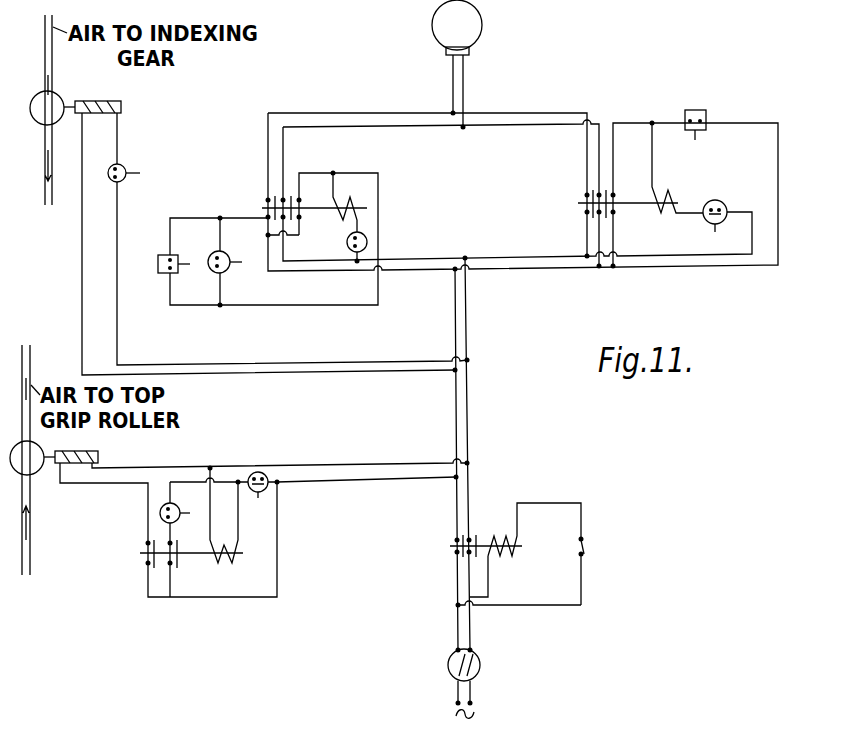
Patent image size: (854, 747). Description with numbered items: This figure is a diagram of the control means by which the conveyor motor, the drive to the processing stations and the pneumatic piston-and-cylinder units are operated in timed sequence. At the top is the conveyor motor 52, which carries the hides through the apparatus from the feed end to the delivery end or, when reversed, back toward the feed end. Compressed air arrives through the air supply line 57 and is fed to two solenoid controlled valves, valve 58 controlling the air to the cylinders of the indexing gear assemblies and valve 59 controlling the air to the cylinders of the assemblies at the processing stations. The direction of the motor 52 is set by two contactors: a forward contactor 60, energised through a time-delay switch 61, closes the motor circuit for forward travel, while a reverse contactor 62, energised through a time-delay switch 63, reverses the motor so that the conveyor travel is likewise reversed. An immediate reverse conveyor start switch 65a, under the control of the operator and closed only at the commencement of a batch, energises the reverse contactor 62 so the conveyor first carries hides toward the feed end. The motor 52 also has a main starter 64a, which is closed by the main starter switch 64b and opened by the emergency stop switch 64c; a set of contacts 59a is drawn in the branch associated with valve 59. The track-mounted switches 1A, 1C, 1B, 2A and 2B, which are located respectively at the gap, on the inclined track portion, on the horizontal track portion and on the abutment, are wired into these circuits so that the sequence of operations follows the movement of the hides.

The conveyor motor 52 is at (468, 36).
The air supply line 57 is at (45, 196).
The solenoid controlled valve 58 is at (75, 108).
The solenoid controlled valve 59 is at (54, 458).
The relay contacts 59a is at (177, 554).
The forward contactor 60 is at (613, 204).
The time-delay switch 61 is at (695, 110).
The reverse contactor 62 is at (266, 210).
The time-delay switch 63 is at (158, 265).
The main starter 64a is at (467, 544).
The main starter switch 64b is at (584, 546).
The emergency stop switch 64c is at (480, 662).
The immediate reverse conveyor start switch 65a is at (228, 271).
The switch 1A is at (719, 203).
The switch 1B is at (185, 505).
The switch 1C is at (258, 499).
The switch 2A is at (347, 243).
The switch 2B is at (131, 163).